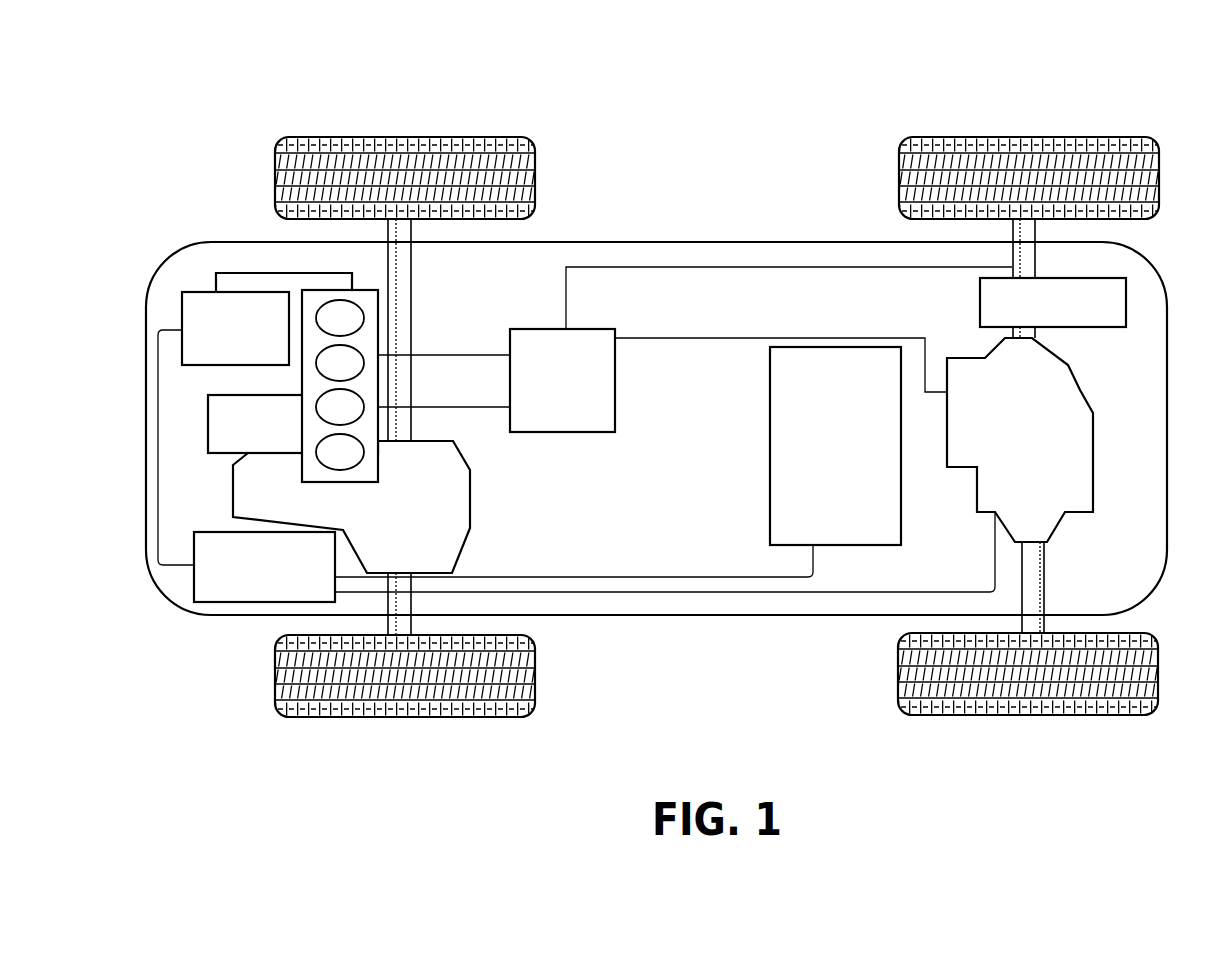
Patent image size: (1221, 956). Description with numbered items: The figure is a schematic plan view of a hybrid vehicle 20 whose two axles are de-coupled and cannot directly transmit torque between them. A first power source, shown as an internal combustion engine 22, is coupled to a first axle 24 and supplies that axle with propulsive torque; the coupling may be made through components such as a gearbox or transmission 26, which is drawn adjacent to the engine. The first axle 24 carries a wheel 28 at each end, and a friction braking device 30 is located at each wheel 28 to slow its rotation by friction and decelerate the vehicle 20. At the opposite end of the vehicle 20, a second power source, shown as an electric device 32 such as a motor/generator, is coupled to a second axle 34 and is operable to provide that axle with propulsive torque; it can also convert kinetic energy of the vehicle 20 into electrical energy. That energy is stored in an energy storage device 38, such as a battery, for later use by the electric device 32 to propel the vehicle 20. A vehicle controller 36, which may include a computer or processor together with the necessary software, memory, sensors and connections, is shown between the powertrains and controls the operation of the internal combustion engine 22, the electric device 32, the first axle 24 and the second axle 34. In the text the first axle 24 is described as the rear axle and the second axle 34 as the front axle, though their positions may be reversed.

The hybrid vehicle 20 is at (801, 101).
The internal combustion engine 22 is at (320, 296).
The first axle 24 is at (413, 283).
The transmission 26 is at (386, 519).
The wheel 28 is at (513, 160).
The friction braking device 30 is at (354, 158).
The electric device 32 is at (1018, 448).
The second axle 34 is at (1046, 567).
The vehicle controller 36 is at (546, 393).
The energy storage device 38 is at (823, 449).